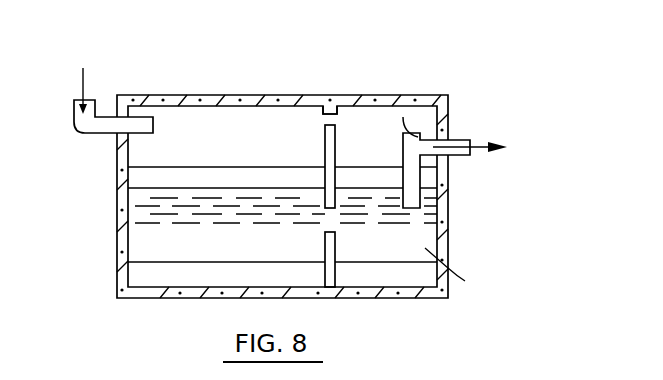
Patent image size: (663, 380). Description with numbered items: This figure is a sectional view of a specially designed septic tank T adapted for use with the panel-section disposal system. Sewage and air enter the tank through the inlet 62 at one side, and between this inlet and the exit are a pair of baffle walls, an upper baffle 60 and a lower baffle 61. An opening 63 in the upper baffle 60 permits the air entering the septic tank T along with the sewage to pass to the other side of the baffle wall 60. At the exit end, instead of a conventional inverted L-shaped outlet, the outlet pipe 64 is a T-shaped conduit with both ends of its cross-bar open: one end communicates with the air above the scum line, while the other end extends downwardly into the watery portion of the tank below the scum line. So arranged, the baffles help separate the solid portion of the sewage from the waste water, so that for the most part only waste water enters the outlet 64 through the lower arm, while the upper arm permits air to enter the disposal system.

The septic tank T is at (448, 228).
The upper baffle wall 60 is at (335, 135).
The lower baffle wall 61 is at (337, 273).
The inlet 62 is at (153, 123).
The opening 63 is at (335, 120).
The outlet pipe 64 is at (463, 157).